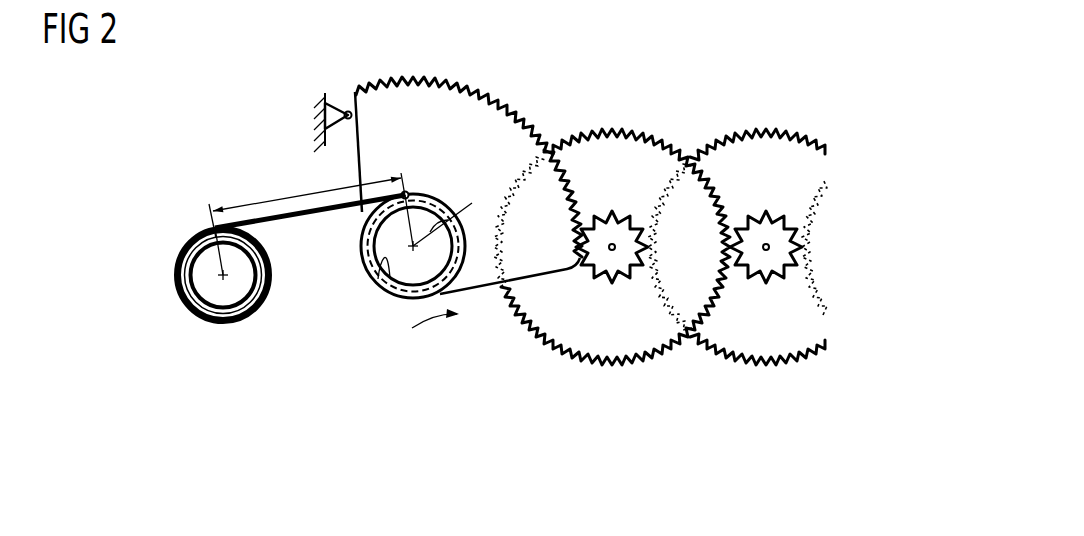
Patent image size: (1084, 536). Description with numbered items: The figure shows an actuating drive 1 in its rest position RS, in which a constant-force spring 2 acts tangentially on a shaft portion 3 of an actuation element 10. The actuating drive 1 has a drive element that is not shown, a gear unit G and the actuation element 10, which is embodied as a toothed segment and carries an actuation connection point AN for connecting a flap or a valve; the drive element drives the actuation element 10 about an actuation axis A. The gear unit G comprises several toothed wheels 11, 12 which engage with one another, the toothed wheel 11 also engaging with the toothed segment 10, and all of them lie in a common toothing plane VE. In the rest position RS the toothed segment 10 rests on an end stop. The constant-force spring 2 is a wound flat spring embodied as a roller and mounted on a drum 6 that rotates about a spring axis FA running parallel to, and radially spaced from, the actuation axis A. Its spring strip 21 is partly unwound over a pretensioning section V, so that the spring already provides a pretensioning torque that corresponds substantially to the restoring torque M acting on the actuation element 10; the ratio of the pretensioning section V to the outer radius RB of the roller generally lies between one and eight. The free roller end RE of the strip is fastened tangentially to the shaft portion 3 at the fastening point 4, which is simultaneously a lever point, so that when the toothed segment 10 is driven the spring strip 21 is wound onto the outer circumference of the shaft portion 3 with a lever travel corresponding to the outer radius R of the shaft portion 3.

The actuating drive 1 is at (740, 60).
The constant-force spring 2 is at (229, 323).
The shaft portion 3 is at (453, 284).
The fastening point 4 is at (408, 194).
The drum 6 is at (245, 296).
The actuation element 10 is at (497, 106).
The transmission toothed wheel 11 is at (602, 360).
The transmission toothed wheel 12 is at (787, 358).
The spring strip 21 is at (278, 208).
The rest position RS is at (345, 113).
The roller end RE is at (380, 190).
The outer radius of the shaft portion R is at (452, 218).
The toothing plane VE is at (552, 246).
The outer radius of the roller spring RB is at (222, 272).
The actuation connection point AN is at (372, 272).
The actuation axis A is at (412, 247).
The spring axis FA is at (214, 280).
The restoring torque M is at (428, 340).
The pretensioning section V is at (307, 200).
The gear unit G is at (691, 362).